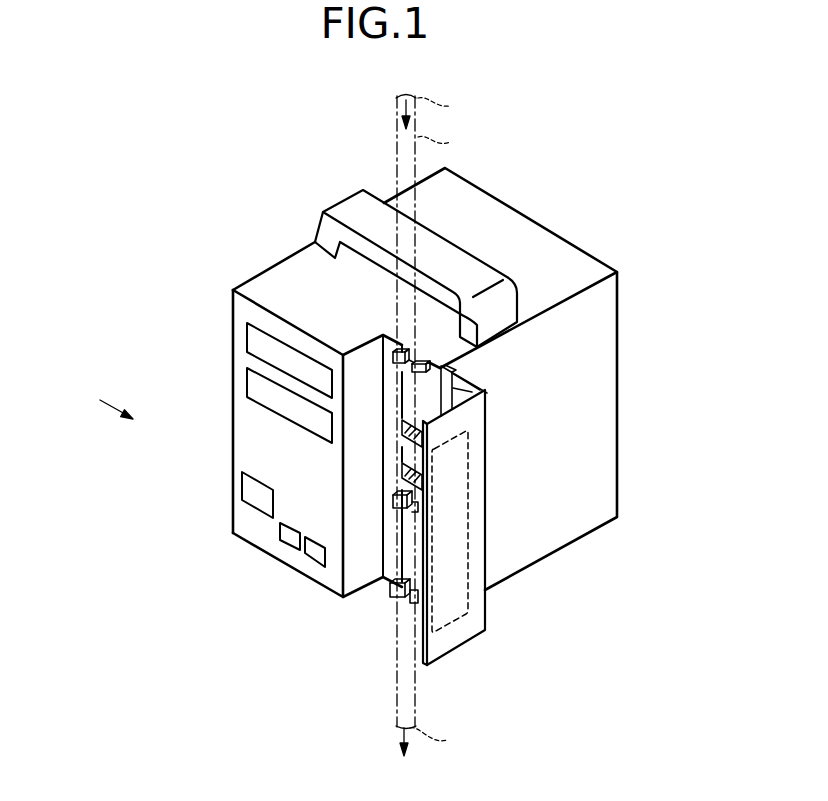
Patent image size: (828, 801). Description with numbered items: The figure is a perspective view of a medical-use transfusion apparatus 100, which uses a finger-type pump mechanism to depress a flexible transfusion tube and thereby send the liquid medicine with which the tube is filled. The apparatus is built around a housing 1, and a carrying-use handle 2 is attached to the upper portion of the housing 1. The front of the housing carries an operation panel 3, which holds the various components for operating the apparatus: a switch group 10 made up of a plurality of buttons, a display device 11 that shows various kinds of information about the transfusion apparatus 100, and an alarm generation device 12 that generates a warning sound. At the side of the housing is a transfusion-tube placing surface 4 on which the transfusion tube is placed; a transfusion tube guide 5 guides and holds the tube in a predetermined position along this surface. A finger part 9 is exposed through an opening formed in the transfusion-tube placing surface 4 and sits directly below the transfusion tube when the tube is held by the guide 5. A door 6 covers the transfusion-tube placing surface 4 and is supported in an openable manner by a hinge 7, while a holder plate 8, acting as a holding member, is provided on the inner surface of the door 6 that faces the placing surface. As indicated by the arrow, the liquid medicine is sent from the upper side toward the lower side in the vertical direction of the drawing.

The transfusion apparatus 100 is at (569, 192).
The housing 1 is at (293, 268).
The carrying-use handle 2 is at (352, 205).
The operation panel 3 is at (253, 420).
The transfusion-tube placing surface 4 is at (390, 367).
The transfusion tube guide 5 is at (428, 363).
The door 6 is at (455, 637).
The hinge 7 is at (488, 398).
The holder plate 8 is at (467, 583).
The finger part 9 is at (389, 489).
The switch group 10 is at (290, 536).
The display device 11 is at (253, 338).
The alarm generation device 12 is at (252, 495).